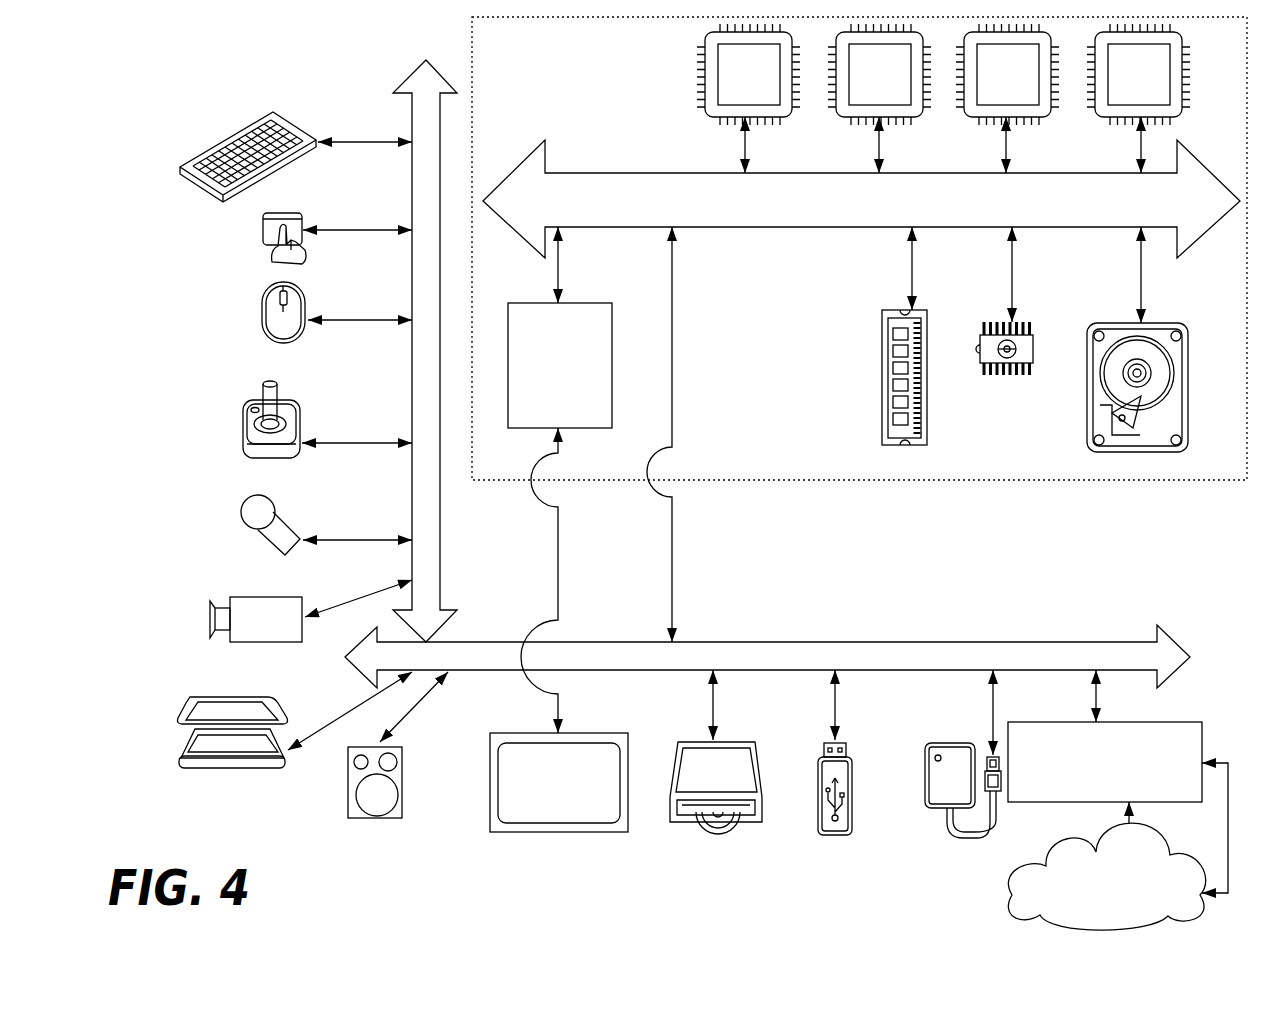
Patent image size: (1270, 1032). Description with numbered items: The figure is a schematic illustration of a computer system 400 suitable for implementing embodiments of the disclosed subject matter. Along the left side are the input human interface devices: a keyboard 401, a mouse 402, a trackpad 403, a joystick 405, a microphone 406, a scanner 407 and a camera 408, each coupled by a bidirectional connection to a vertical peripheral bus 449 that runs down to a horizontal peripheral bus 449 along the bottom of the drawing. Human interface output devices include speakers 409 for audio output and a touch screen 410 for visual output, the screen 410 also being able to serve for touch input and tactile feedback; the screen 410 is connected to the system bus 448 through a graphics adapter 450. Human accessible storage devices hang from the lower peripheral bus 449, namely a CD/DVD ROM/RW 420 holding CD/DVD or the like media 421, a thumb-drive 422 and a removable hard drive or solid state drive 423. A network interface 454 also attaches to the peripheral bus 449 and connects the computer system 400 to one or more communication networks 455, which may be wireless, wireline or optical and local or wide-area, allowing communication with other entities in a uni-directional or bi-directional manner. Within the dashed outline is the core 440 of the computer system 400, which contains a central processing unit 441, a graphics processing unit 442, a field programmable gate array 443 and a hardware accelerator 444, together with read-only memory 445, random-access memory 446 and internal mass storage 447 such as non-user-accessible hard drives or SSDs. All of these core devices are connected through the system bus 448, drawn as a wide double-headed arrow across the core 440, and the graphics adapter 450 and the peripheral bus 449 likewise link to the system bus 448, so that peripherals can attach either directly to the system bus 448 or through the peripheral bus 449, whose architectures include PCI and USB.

The computer system 400 is at (143, 69).
The keyboard 401 is at (182, 168).
The mouse 402 is at (262, 310).
The trackpad 403 is at (263, 232).
The joystick 405 is at (243, 440).
The microphone 406 is at (241, 512).
The scanner 407 is at (180, 758).
The camera 408 is at (213, 618).
The speakers 409 is at (372, 818).
The touch screen 410 is at (556, 833).
The CD/DVD ROM/RW 420 is at (757, 822).
The CD/DVD or the like media 421 is at (700, 830).
The thumb-drive 422 is at (836, 836).
The removable hard drive or solid state drive 423 is at (932, 809).
The core 440 is at (852, 482).
The Central Processing Unit (CPU) 441 is at (734, 95).
The Graphics Processing Unit (GPU) 442 is at (865, 95).
The Field Programmable Gate Array (FPGA) 443 is at (993, 95).
The hardware accelerator 444 is at (1124, 95).
The Read-only memory (ROM) 445 is at (1000, 376).
The Random-access memory 446 is at (880, 405).
The internal mass storage 447 is at (1097, 322).
The system bus 448 is at (931, 213).
The peripheral bus 449 is at (412, 105).
The graphics adapter 450 is at (545, 410).
The network interface 454 is at (1090, 786).
The communication networks 455 is at (975, 875).